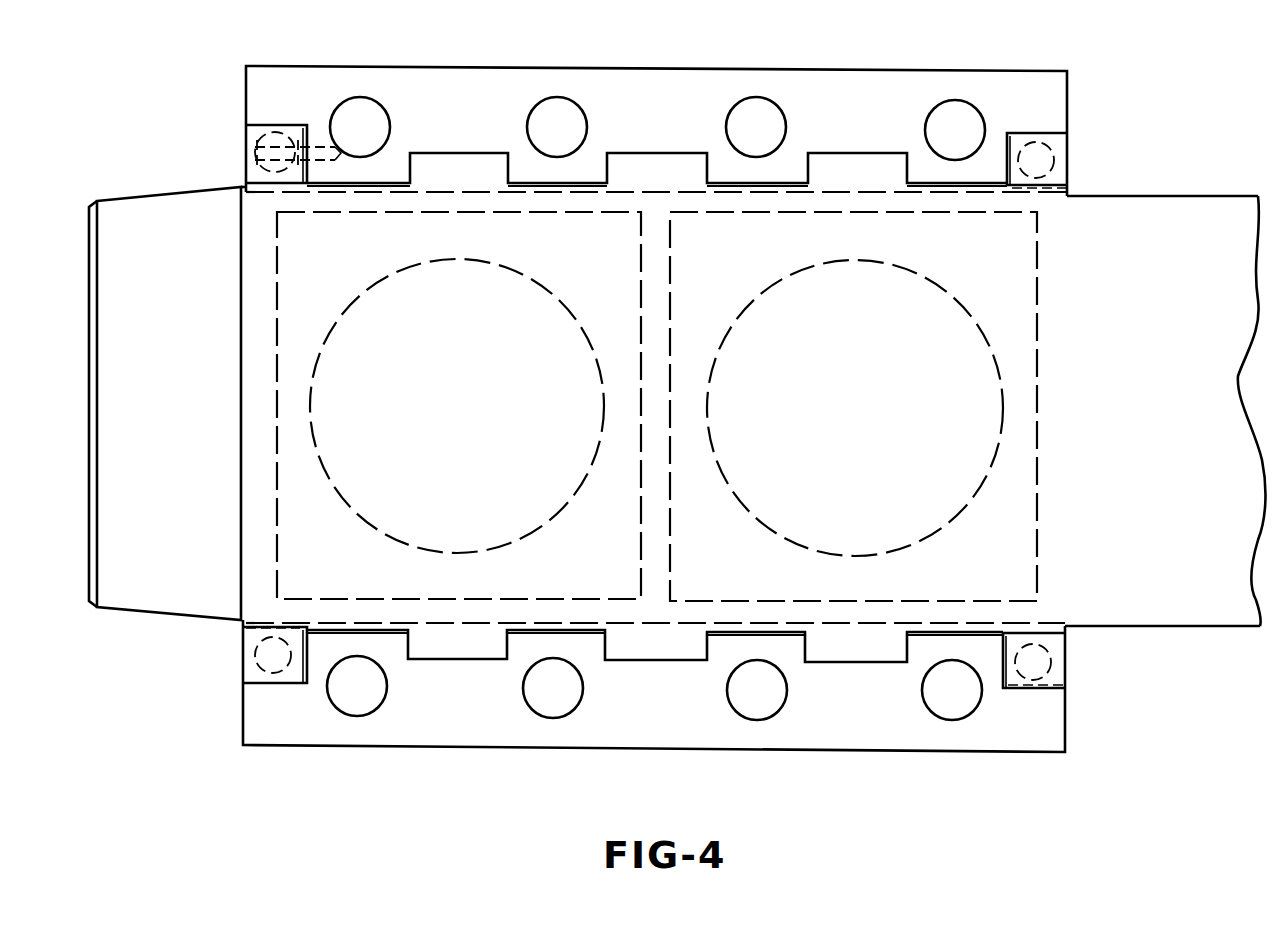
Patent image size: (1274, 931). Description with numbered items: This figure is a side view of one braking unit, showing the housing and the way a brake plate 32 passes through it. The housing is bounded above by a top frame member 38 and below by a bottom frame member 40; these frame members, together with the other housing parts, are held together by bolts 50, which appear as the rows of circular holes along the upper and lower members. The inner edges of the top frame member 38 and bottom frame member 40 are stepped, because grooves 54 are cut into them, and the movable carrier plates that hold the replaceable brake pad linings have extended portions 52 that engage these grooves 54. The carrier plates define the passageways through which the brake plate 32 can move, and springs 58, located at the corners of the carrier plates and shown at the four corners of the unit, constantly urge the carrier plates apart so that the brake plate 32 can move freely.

The brake plate 32 is at (164, 549).
The top frame member 38 is at (1023, 102).
The bottom frame member 40 is at (1033, 732).
The bolt 50 is at (963, 147).
The extended portion 52 is at (828, 168).
The groove 54 is at (877, 153).
The spring 58 is at (265, 150).